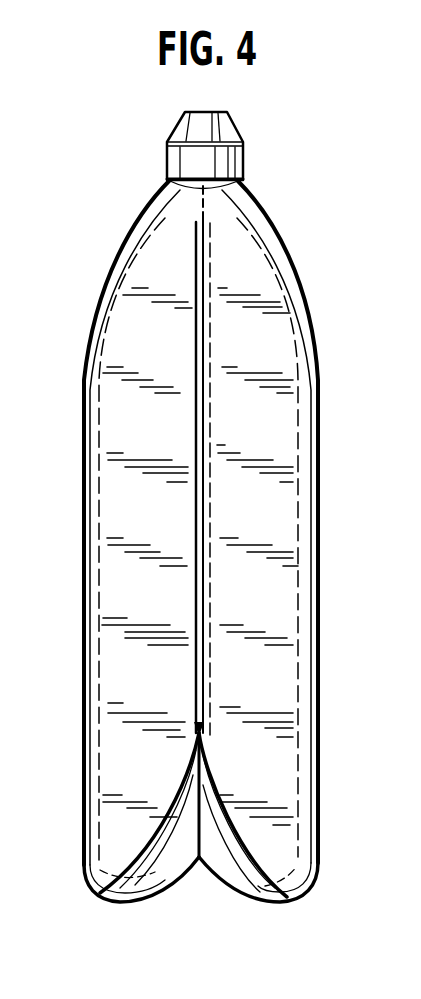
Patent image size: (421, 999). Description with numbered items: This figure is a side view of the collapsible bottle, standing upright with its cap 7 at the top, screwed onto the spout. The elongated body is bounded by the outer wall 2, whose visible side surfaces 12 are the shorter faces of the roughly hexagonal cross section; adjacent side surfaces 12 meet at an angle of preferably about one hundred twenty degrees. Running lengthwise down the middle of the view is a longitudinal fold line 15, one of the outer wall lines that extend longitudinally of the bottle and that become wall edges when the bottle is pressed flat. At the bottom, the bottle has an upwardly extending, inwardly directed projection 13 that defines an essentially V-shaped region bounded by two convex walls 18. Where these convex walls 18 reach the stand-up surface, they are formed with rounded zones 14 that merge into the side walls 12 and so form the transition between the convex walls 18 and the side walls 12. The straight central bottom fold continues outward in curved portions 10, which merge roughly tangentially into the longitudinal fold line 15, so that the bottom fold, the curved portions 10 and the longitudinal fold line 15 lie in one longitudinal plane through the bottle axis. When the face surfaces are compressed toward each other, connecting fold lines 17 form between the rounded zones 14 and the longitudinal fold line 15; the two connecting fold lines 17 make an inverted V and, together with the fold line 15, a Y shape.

The outer wall 2 is at (330, 691).
The cap 7 is at (223, 162).
The curved portions 10 is at (190, 774).
The side surfaces 12 is at (127, 583).
The projection 13 is at (198, 878).
The rounded zones 14 is at (103, 900).
The longitudinal fold lines 15 is at (203, 490).
The connecting fold lines 17 is at (150, 843).
The convex walls 18 is at (163, 900).